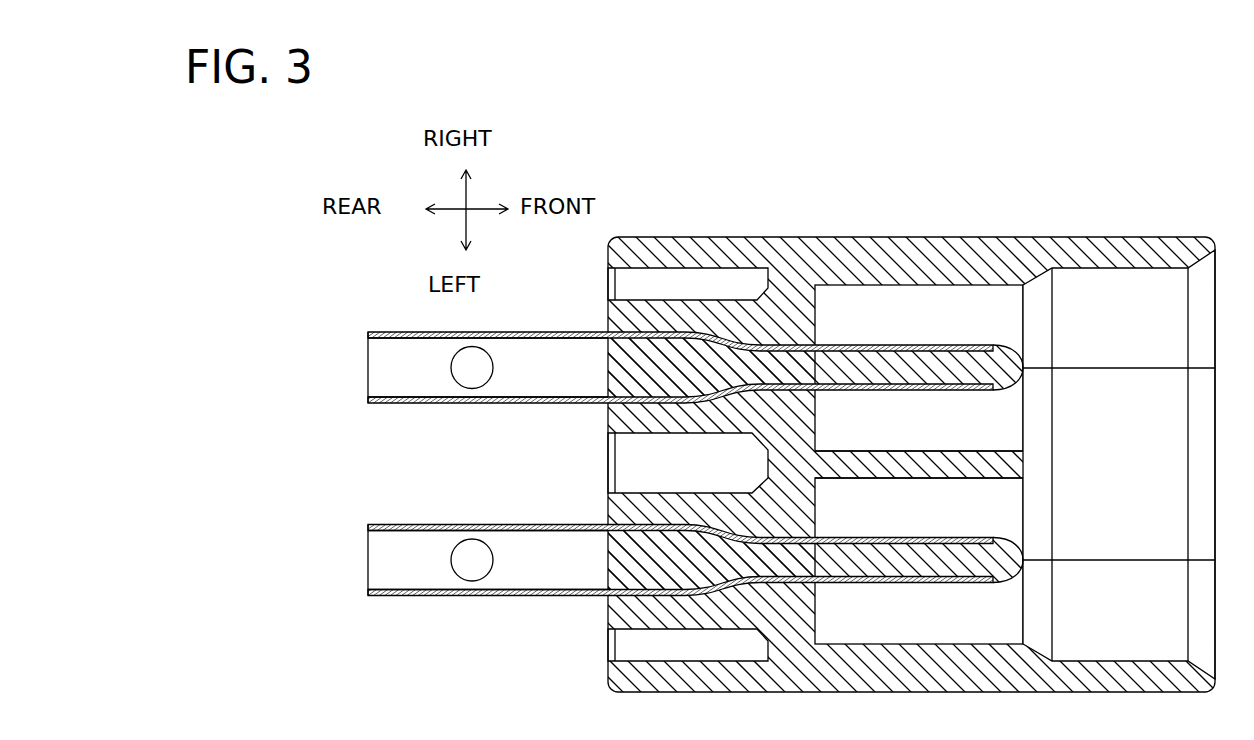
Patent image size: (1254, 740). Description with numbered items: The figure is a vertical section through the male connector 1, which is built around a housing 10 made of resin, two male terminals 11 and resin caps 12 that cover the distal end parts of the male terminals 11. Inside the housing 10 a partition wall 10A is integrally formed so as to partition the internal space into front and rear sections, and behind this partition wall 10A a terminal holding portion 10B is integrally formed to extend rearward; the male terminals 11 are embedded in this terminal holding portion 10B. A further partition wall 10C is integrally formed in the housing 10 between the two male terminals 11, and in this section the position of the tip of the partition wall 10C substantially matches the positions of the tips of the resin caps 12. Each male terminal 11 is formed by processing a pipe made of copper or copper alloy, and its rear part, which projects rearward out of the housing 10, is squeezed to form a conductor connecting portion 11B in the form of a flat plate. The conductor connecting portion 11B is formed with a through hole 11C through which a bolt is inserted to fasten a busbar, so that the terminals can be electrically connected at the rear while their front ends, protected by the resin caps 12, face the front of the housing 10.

The male connector 1 is at (805, 206).
The housing 10 is at (698, 439).
The partition wall 10A is at (804, 517).
The terminal holding portion 10B is at (663, 423).
The partition wall 10C is at (972, 478).
The male terminal 11 is at (698, 465).
The conductor connecting portion 11B is at (544, 332).
The through hole 11C is at (485, 376).
The resin cap 12 is at (1016, 376).